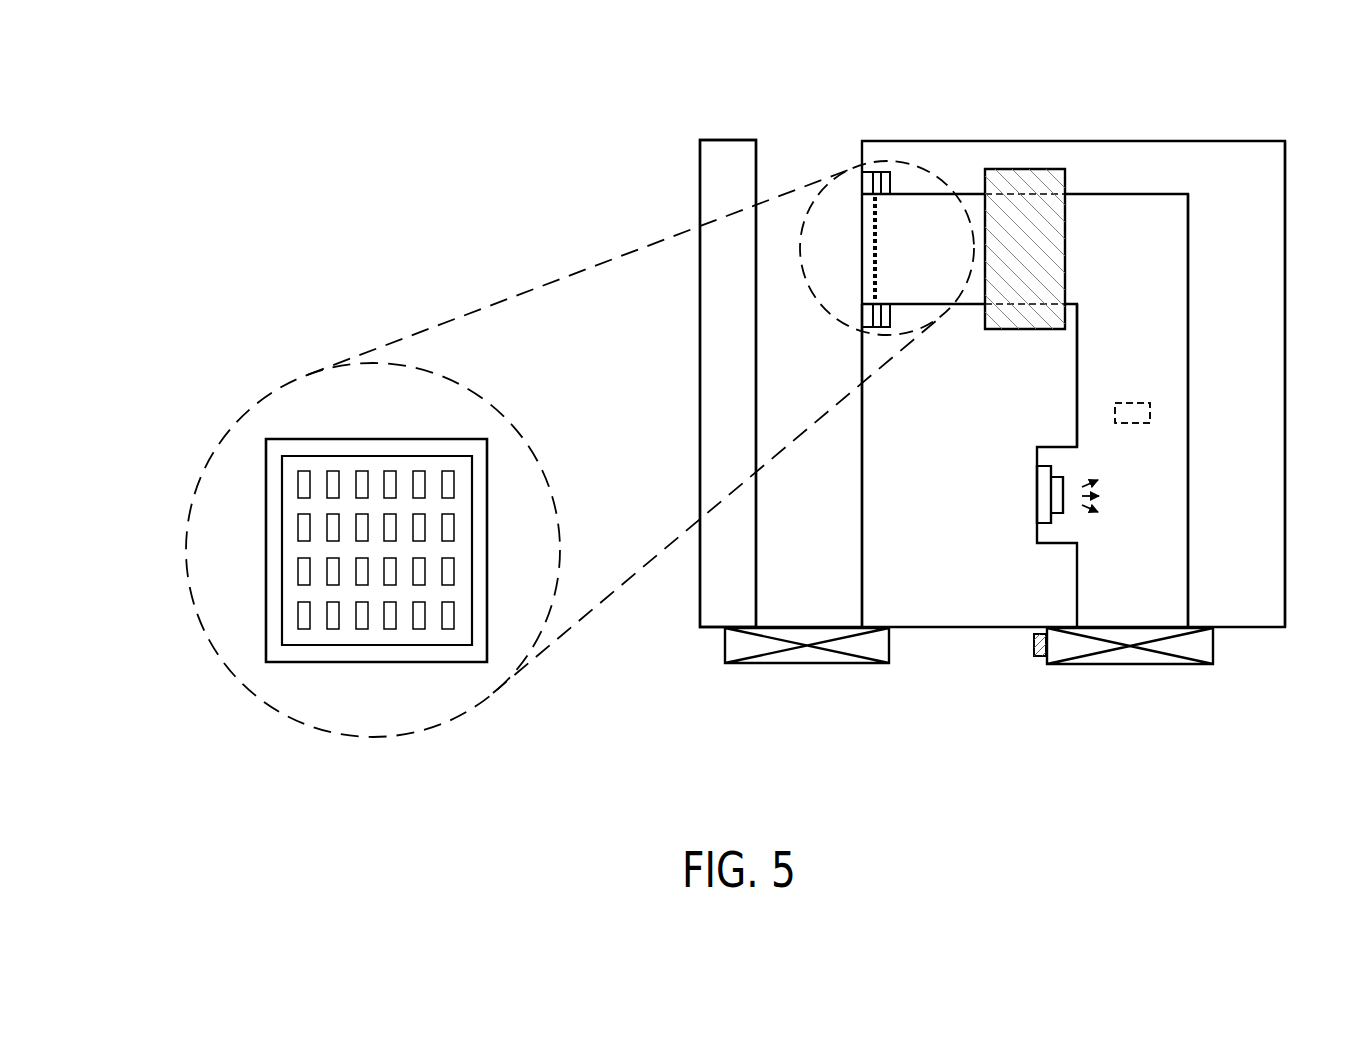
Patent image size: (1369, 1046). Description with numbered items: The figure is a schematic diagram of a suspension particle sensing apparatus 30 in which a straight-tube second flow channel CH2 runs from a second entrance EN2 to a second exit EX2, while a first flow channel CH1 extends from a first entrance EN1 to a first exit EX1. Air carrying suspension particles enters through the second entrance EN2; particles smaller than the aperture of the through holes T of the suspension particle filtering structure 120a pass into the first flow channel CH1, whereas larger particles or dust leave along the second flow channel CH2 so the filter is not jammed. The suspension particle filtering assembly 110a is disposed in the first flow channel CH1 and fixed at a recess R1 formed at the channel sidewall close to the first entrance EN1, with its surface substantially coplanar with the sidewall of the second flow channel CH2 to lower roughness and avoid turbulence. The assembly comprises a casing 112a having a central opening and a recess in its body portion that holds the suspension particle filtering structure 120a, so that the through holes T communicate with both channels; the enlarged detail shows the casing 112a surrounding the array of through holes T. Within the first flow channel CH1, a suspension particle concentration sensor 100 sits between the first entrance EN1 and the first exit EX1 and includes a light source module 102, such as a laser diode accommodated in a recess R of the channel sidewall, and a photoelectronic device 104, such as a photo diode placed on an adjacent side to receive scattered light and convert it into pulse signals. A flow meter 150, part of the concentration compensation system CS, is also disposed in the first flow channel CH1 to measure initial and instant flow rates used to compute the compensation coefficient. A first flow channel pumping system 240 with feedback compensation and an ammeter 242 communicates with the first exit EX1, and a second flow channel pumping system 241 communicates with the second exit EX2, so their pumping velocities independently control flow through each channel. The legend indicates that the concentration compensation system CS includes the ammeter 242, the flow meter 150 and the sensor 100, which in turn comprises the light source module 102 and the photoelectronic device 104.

The suspension particle sensing apparatus 30 is at (1300, 795).
The concentration compensation system CS is at (165, 56).
The suspension particle concentration sensor 100 is at (165, 181).
The light source module 102 is at (1043, 495).
The photoelectronic device 104 is at (1150, 418).
The flow meter 150 is at (1052, 183).
The ammeter 242 is at (1034, 645).
The second flow channel pumping system 241 is at (807, 665).
The first flow channel pumping system 240 is at (1130, 665).
The suspension particle filtering structure 120a is at (876, 190).
The casing 112a is at (866, 188).
The suspension particle filtering assembly 110a is at (830, 298).
The recess R1 is at (890, 178).
The recess R is at (1060, 448).
The through holes T is at (856, 243).
The first flow channel CH1 is at (1190, 228).
The second flow channel CH2 is at (722, 183).
The first entrance EN1 is at (919, 244).
The second entrance EN2 is at (774, 147).
The first exit EX1 is at (1132, 607).
The second exit EX2 is at (811, 608).